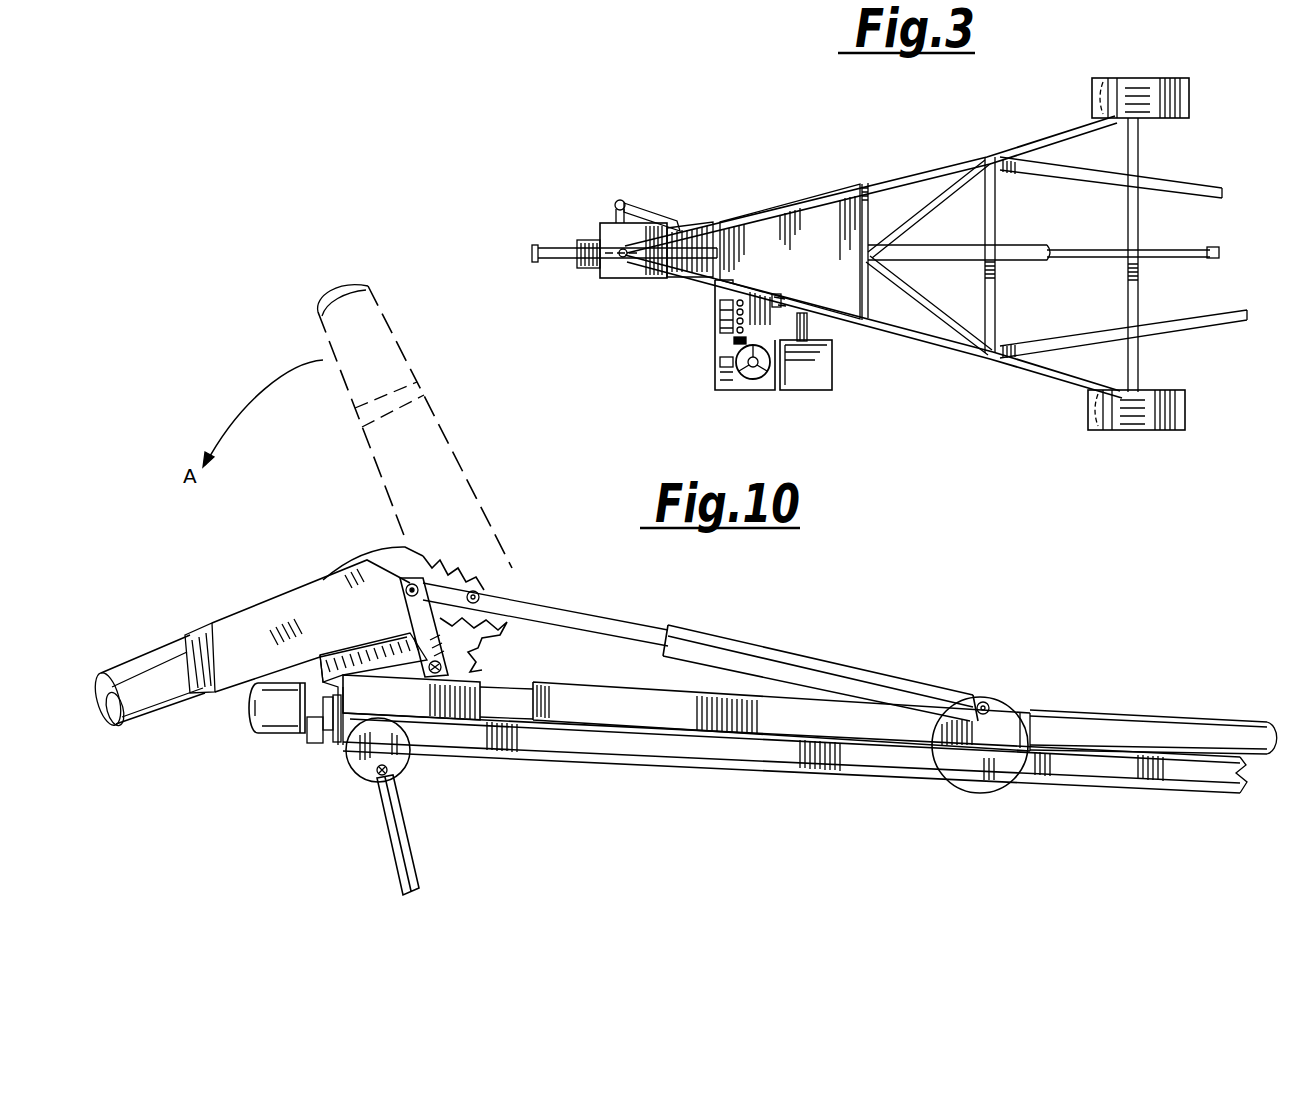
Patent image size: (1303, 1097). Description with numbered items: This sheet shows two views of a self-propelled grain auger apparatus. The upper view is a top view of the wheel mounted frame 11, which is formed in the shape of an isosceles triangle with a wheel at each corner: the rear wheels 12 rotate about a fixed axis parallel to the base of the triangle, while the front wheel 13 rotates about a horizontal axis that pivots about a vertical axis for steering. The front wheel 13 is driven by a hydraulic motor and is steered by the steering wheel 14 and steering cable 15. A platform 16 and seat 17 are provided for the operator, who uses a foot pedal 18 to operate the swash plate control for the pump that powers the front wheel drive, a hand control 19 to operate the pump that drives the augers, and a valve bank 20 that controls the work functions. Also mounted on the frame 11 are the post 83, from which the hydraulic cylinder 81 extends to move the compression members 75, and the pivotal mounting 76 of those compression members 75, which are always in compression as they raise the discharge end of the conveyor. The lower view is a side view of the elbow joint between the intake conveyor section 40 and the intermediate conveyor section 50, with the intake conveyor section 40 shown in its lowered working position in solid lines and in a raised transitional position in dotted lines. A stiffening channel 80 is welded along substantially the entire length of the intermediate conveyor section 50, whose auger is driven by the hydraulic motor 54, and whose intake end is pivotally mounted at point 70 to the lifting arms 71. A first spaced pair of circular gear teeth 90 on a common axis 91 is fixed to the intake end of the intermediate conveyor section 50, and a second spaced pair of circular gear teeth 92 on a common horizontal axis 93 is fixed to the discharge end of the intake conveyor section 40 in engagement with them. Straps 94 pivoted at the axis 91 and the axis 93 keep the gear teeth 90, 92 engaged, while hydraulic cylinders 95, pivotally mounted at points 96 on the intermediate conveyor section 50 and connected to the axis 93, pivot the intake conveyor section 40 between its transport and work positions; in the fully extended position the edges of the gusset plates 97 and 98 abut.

In FIG. 3, the frame 11 is at (868, 182).
In FIG. 3, the rear wheels 12 is at (1145, 84).
In FIG. 3, the front wheel 13 is at (600, 240).
In FIG. 3, the steering wheel 14 is at (762, 380).
In FIG. 3, the steering cable 15 is at (681, 222).
In FIG. 3, the platform 16 is at (806, 325).
In FIG. 3, the seat 17 is at (812, 372).
In FIG. 3, the foot pedal 18 is at (735, 342).
In FIG. 3, the hand control 19 is at (782, 294).
In FIG. 3, the valve bank 20 is at (720, 312).
In FIG. 10, the intake conveyor section 40 is at (470, 484).
In FIG. 10, the intermediate conveyor section 50 is at (1100, 711).
In FIG. 10, the hydraulic motor 54 is at (280, 737).
In FIG. 10, the pivot point 70 is at (375, 772).
In FIG. 3, the lifting arms 71 is at (540, 250).
In FIG. 10, the lifting arms 71 is at (390, 830).
In FIG. 3, the compression members 75 is at (1194, 186).
In FIG. 3, the pivotal mounting 76 is at (997, 156).
In FIG. 10, the stiffening channel 80 is at (1170, 768).
In FIG. 3, the hydraulic cylinder 81 is at (1030, 250).
In FIG. 3, the post 83 is at (875, 242).
In FIG. 10, the first spaced pair of circular gear teeth 90 is at (481, 660).
In FIG. 10, the common axis 91 is at (467, 652).
In FIG. 10, the second spaced pair of circular gear teeth 92 is at (457, 578).
In FIG. 10, the common horizontal axis 93 is at (418, 556).
In FIG. 10, the straps 94 is at (400, 580).
In FIG. 10, the hydraulic cylinders 95 is at (800, 645).
In FIG. 10, the pivotal mounting points 96 is at (988, 705).
In FIG. 10, the gusset plate 97 is at (397, 656).
In FIG. 10, the gusset plate 98 is at (397, 693).